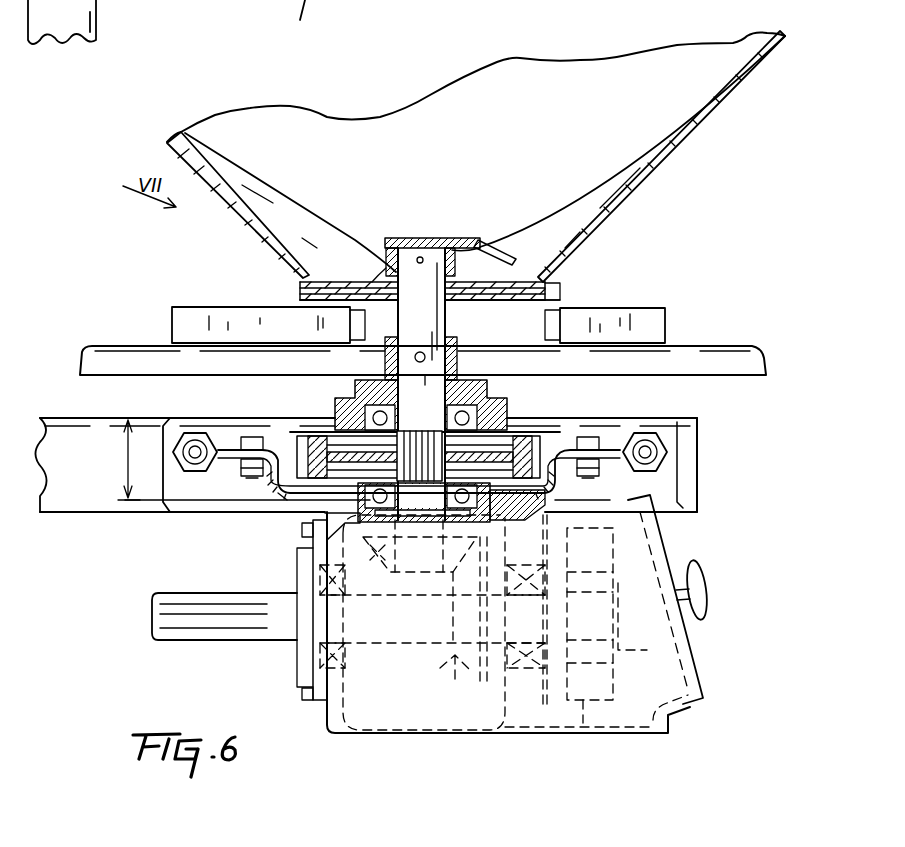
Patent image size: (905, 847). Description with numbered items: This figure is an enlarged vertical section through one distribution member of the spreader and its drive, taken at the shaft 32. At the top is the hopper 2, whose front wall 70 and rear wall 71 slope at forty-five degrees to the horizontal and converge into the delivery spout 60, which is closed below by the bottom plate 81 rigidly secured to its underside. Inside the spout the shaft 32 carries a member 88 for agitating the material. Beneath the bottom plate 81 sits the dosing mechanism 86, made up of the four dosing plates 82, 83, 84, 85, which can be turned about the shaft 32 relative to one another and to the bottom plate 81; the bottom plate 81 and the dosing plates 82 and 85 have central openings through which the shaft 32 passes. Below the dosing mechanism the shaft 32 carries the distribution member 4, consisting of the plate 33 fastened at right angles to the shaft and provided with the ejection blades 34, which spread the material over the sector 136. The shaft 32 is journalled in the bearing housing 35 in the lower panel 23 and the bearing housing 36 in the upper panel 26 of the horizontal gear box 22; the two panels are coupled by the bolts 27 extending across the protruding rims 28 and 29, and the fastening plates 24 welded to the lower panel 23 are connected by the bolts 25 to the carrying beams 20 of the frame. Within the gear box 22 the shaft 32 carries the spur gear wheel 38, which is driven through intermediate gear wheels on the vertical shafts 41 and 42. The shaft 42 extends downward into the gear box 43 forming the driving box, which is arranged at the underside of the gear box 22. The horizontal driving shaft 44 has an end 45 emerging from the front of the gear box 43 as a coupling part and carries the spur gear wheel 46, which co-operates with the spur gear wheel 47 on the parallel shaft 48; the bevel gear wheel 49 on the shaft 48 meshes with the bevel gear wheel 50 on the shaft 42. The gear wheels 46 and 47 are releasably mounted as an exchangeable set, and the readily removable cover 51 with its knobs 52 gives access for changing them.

The hopper 2 is at (674, 42).
The delivery spout 60 is at (393, 148).
The front wall 70 is at (246, 228).
The rear wall 71 is at (688, 132).
The agitating member 88 is at (476, 240).
The bottom plate 81 is at (530, 282).
The vertical shaft 41 is at (342, 280).
The dosing plate 82 is at (300, 286).
The dosing plate 83 is at (300, 295).
The dosing mechanism 86 is at (588, 294).
The dosing plate 84 is at (574, 300).
The dosing plate 85 is at (508, 303).
The shaft 32 is at (425, 322).
The distribution member 4 is at (714, 338).
The plate 33 is at (84, 346).
The ejection blades 34 is at (180, 322).
The bearing housing 36 is at (360, 396).
The spur gear wheel 38 is at (505, 438).
The upper panel 26 is at (540, 430).
The bolts 27 is at (252, 435).
The protruding rim 29 is at (622, 418).
The bolts 25 is at (196, 446).
The sector 136 is at (128, 446).
The carrying beam 20 is at (94, 502).
The fastening plates 24 is at (202, 503).
The lower panel 23 is at (297, 503).
The gear box 22 is at (330, 525).
The bearing housing 35 is at (345, 513).
The gear box 43 is at (354, 744).
The driving shaft 44 is at (283, 632).
The end 45 is at (165, 613).
The bevel gear wheel 50 is at (385, 608).
The vertical shaft 42 is at (445, 632).
The shaft 48 is at (425, 650).
The bevel gear wheel 49 is at (448, 664).
The spur gear wheel 47 is at (566, 614).
The protruding rim 28 is at (611, 490).
The spur gear wheel 46 is at (598, 728).
The cover 51 is at (693, 675).
The knobs 52 is at (695, 572).